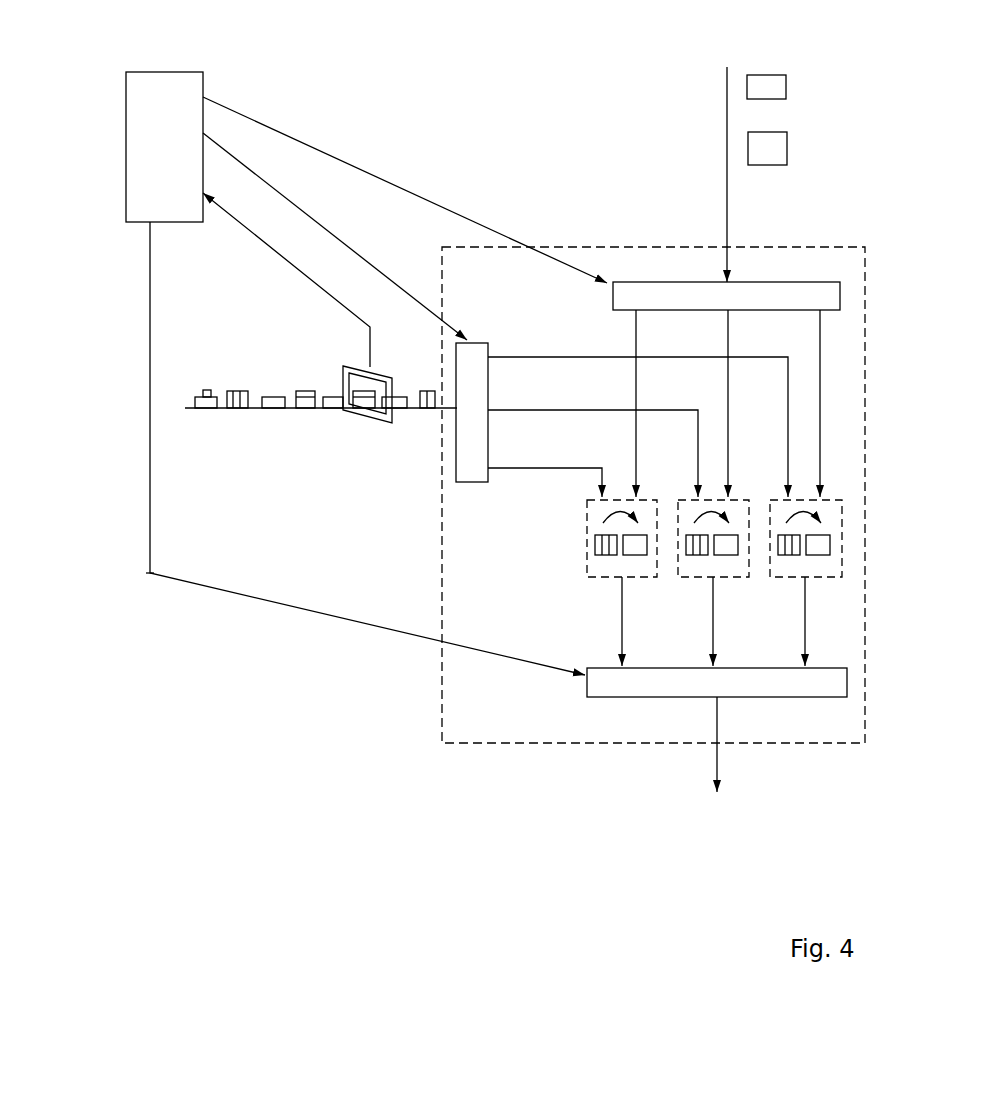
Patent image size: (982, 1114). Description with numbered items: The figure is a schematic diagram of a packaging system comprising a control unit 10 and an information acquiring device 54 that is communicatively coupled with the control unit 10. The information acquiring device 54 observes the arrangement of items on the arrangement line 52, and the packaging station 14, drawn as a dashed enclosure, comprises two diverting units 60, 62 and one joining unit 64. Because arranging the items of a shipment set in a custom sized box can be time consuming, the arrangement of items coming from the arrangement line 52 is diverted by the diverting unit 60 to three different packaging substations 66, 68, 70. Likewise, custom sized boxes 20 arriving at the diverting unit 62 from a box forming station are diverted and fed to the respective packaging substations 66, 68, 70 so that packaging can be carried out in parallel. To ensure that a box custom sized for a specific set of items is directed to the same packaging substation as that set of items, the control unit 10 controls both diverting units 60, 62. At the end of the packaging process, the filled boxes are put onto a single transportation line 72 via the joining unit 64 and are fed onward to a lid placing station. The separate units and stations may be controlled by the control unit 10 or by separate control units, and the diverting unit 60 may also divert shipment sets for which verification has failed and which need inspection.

The control unit 10 is at (133, 107).
The packaging station 14 is at (442, 700).
The custom sized boxes 20 is at (770, 75).
The arrangement line 52 is at (253, 408).
The information acquiring device 54 is at (377, 418).
The diverting unit 60 is at (487, 350).
The diverting unit 62 is at (658, 295).
The joining unit 64 is at (630, 682).
The packaging substation 66 is at (605, 693).
The packaging substation 68 is at (693, 572).
The packaging substation 70 is at (783, 572).
The transportation line 72 is at (710, 760).